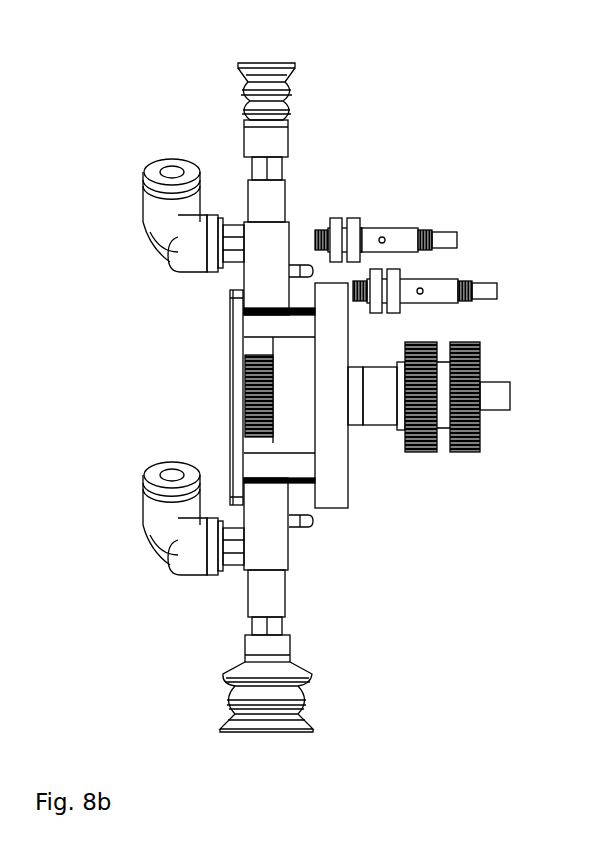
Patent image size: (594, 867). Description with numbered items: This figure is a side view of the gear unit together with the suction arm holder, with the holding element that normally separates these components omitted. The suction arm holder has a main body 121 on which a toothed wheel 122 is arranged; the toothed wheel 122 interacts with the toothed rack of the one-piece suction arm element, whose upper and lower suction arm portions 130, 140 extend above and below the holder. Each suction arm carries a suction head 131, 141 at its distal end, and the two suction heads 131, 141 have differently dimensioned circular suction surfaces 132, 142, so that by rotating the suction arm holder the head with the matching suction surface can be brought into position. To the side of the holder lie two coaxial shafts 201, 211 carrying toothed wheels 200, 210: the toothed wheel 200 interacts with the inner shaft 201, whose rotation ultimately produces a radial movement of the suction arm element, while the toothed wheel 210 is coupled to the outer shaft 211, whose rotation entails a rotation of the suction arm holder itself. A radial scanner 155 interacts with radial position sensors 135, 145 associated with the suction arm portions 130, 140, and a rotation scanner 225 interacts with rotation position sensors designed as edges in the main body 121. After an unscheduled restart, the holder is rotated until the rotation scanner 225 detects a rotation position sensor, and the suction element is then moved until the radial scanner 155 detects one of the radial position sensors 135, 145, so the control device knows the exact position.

The main body 121 is at (336, 480).
The toothed wheel 122 is at (256, 407).
The suction arm 130 is at (266, 283).
The suction head 131 is at (265, 130).
The suction surface 132 is at (269, 46).
The radial position sensor 135 is at (302, 270).
The suction arm 140 is at (262, 595).
The suction head 141 is at (270, 665).
The suction surface 142 is at (265, 745).
The radial position sensor 145 is at (305, 521).
The radial scanner 155 is at (395, 237).
The toothed wheel 200 is at (482, 437).
The shaft 201 is at (495, 395).
The toothed wheel 210 is at (420, 342).
The shaft 211 is at (372, 416).
The rotation scanner 225 is at (432, 290).